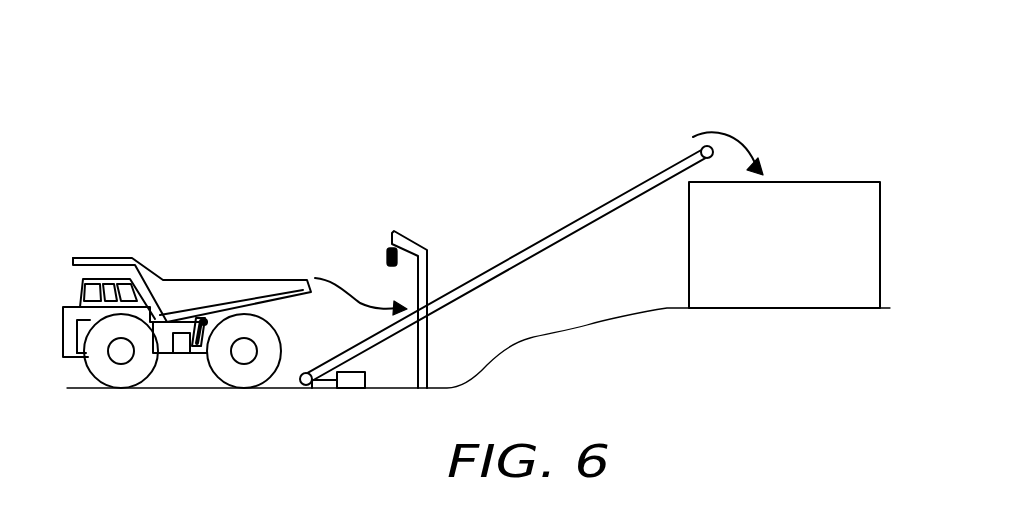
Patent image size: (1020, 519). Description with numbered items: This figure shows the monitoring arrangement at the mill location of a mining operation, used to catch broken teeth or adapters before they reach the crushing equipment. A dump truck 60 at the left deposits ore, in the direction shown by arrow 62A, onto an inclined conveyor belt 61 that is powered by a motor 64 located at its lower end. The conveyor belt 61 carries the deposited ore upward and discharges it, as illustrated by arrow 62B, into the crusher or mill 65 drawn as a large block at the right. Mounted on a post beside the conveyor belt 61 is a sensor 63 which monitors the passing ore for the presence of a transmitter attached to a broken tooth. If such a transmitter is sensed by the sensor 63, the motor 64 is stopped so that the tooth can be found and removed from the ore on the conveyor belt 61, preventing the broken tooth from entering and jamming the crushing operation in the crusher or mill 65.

The dump truck 60 is at (156, 271).
The conveyor belt 61 is at (543, 252).
The arrow 62A is at (346, 291).
The arrow 62B is at (733, 133).
The sensor 63 is at (387, 251).
The motor 64 is at (350, 381).
The crusher or mill 65 is at (783, 181).